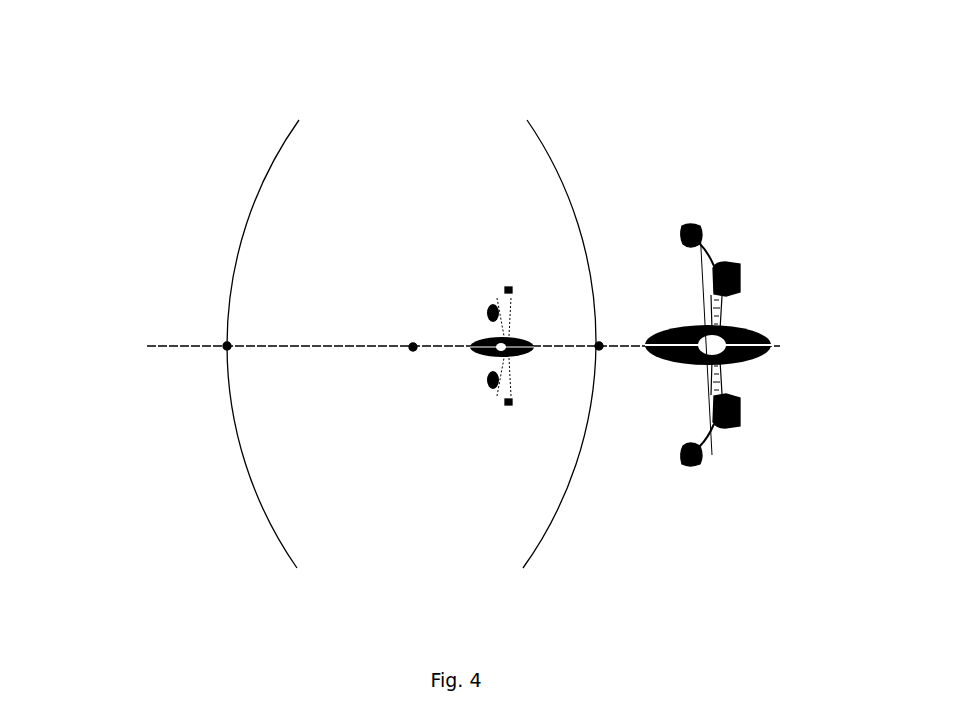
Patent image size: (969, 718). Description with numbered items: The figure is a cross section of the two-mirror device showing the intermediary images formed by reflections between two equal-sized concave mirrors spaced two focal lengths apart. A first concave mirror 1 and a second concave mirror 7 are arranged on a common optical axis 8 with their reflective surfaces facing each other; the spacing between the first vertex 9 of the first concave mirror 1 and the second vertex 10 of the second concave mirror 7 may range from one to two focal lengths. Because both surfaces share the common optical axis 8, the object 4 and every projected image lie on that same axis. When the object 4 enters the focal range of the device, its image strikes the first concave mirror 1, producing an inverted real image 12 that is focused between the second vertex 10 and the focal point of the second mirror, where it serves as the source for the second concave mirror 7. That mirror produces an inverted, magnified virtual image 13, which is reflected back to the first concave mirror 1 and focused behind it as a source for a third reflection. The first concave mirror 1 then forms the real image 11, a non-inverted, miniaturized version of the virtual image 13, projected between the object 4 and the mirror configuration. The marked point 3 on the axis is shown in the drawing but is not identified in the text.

The first concave mirror 1 is at (267, 160).
The focal point 3 is at (414, 347).
The object 4 is at (728, 246).
The second concave mirror 7 is at (560, 171).
The common optical axis 8 is at (167, 347).
The first vertex 9 is at (224, 346).
The second vertex 10 is at (599, 347).
The real image 11 is at (512, 289).
The inverted real image 12 is at (511, 402).
The inverted, magnified virtual image 13 is at (713, 453).